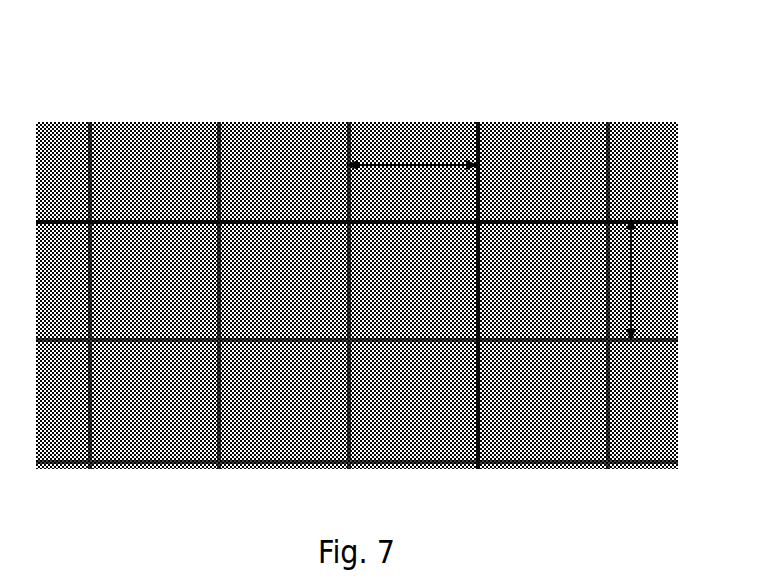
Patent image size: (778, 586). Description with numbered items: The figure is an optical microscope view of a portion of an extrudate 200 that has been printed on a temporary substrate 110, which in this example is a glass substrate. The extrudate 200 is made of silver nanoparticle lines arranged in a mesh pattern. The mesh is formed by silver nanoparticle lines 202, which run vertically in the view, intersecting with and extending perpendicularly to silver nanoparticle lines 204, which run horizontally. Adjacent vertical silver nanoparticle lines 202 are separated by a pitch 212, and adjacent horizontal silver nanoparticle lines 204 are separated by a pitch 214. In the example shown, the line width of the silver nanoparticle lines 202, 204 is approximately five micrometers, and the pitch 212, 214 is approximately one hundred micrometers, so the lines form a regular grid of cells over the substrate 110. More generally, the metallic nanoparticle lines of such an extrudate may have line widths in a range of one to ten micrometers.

The extrudate 200 is at (112, 80).
The temporary substrate 110 is at (247, 124).
The silver nanoparticle lines 202 is at (485, 136).
The silver nanoparticle lines 204 is at (657, 212).
The pitch 212 is at (398, 161).
The pitch 214 is at (636, 277).